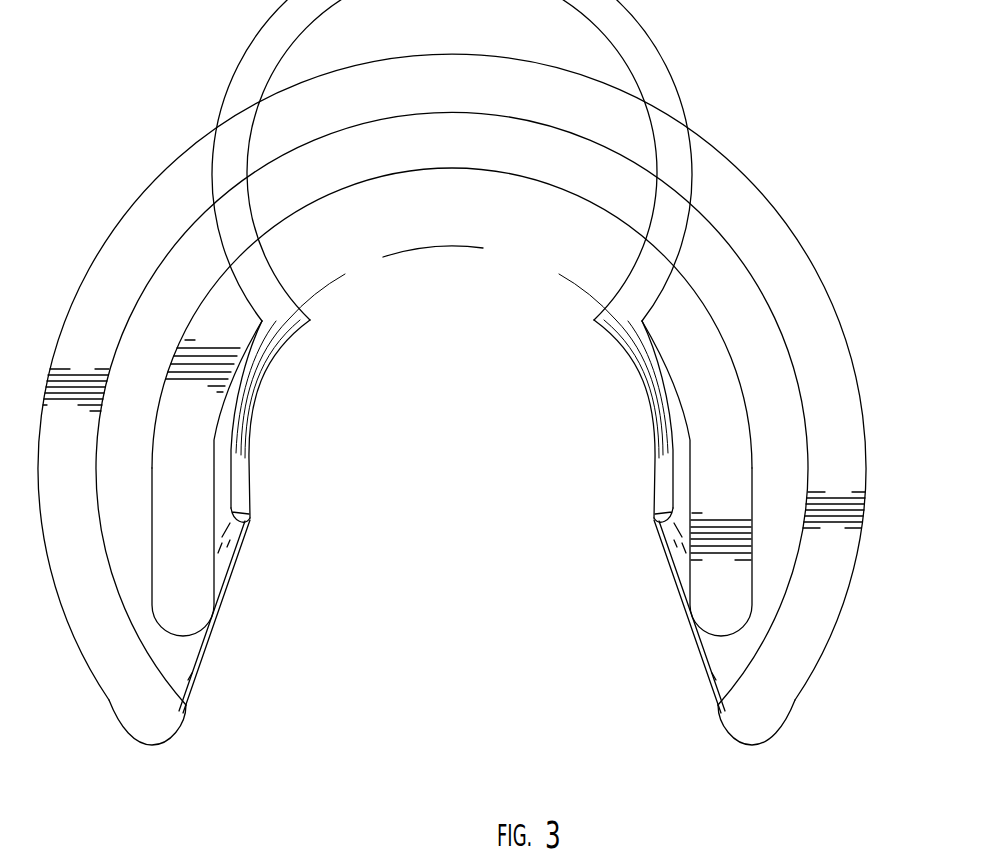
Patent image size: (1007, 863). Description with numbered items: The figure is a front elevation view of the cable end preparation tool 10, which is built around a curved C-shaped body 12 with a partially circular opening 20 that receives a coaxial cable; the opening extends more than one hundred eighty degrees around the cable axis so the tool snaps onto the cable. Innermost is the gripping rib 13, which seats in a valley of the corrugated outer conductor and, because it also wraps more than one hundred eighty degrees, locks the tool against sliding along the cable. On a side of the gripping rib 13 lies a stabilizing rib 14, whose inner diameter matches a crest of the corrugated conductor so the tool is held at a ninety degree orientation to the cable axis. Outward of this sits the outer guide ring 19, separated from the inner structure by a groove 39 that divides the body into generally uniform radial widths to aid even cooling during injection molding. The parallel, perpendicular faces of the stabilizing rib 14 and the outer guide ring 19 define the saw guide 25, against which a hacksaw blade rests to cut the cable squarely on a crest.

The cable end preparation tool 10 is at (172, 96).
The C-shaped body 12 is at (136, 199).
The groove 39 is at (346, 156).
The gripping rib 13 is at (662, 496).
The stabilizing rib 14 is at (710, 607).
The outer guide ring 19 is at (737, 722).
The opening 20 is at (448, 368).
The saw guide 25 is at (185, 603).